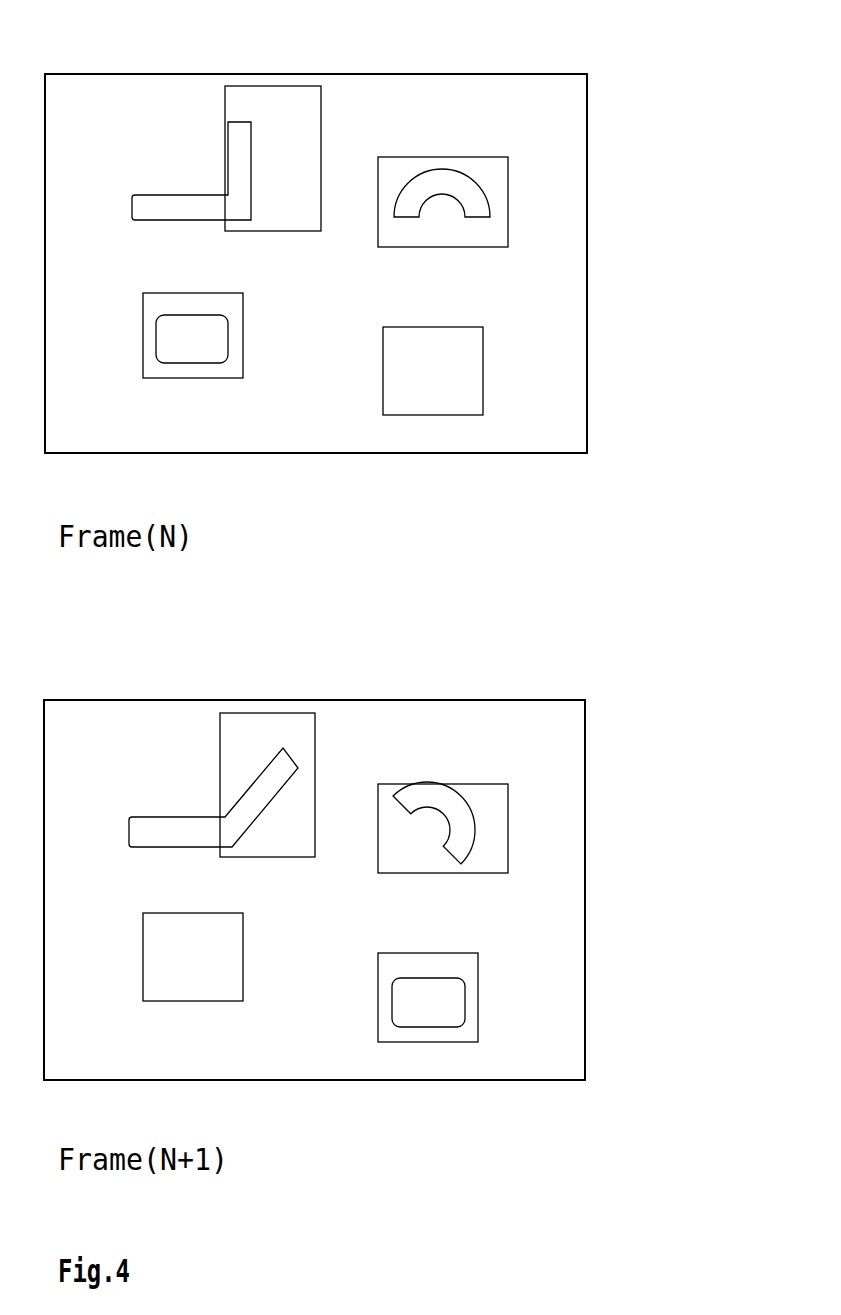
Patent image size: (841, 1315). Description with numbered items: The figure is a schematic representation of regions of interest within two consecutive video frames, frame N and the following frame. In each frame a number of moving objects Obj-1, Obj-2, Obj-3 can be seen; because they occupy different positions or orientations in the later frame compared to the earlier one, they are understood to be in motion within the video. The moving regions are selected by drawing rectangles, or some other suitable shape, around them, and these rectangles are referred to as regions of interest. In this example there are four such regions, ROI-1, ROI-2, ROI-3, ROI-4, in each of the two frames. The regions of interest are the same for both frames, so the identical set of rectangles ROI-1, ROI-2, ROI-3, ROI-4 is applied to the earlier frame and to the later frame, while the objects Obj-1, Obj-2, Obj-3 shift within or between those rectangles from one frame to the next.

The region of interest ROI-1 is at (271, 94).
The region of interest ROI-2 is at (507, 178).
The region of interest ROI-3 is at (233, 389).
The region of interest ROI-4 is at (481, 369).
The object Obj-1 is at (213, 500).
The object Obj-2 is at (444, 540).
The object Obj-3 is at (346, 671).